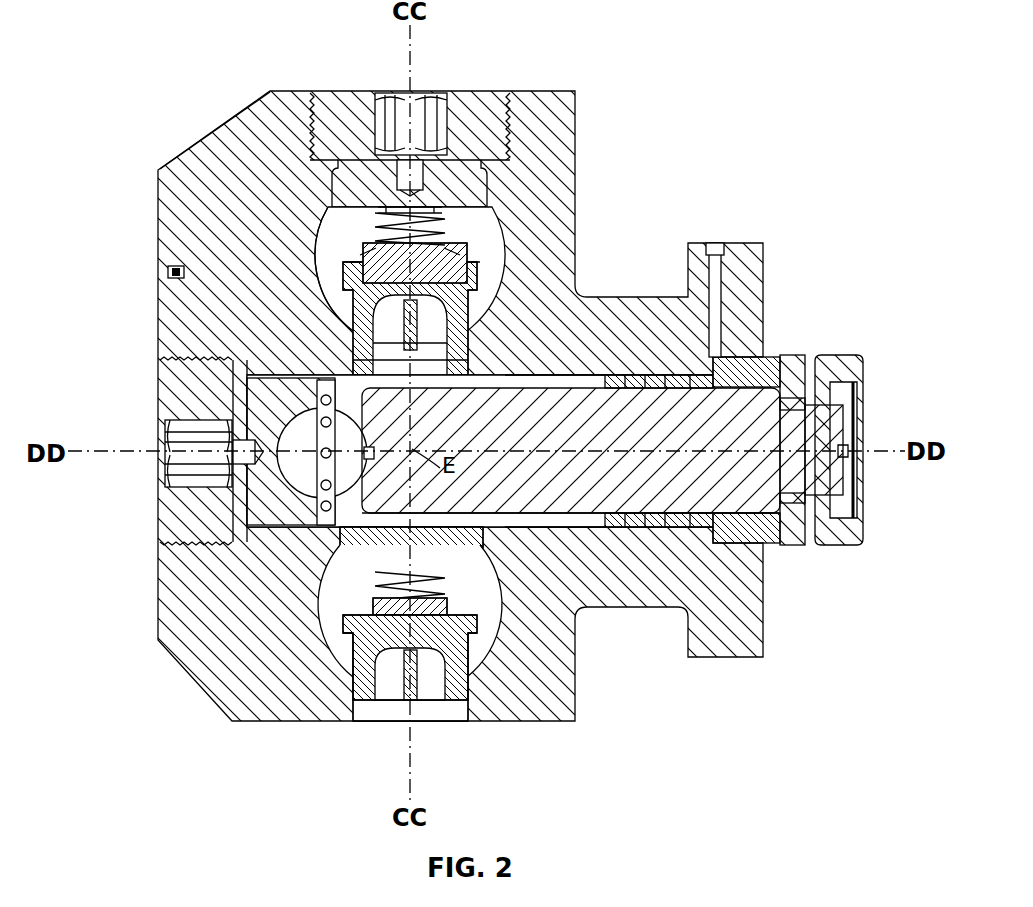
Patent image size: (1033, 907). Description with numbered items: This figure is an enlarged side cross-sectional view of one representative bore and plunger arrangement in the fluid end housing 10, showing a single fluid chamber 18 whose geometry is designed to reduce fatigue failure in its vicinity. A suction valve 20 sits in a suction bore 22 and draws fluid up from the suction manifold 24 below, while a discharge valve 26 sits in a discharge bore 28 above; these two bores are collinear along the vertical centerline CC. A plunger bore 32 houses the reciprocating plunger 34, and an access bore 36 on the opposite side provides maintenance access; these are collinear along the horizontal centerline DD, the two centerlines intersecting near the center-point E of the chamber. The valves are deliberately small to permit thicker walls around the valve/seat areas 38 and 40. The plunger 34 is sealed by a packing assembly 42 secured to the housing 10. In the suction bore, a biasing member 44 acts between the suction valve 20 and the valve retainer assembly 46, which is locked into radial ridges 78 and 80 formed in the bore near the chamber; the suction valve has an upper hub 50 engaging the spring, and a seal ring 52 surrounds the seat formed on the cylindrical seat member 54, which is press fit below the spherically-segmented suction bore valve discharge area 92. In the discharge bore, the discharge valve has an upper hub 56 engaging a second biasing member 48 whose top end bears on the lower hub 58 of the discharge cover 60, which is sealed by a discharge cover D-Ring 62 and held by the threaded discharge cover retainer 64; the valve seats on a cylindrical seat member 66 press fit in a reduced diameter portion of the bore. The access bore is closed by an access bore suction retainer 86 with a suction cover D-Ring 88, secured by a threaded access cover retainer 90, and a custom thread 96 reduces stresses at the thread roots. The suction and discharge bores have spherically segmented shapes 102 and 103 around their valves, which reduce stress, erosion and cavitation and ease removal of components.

The fluid end housing 10 is at (745, 634).
The fluid chamber 18 is at (462, 371).
The suction valve 20 is at (352, 702).
The suction bore 22 is at (478, 645).
The suction manifold 24 is at (425, 700).
The discharge valve 26 is at (500, 238).
The discharge bore 28 is at (455, 248).
The plunger bore 32 is at (600, 380).
The reciprocating plunger 34 is at (830, 430).
The access bore 36 is at (156, 443).
The valve/seat area 38 is at (472, 700).
The valve/seat area 40 is at (395, 280).
The packing assembly 42 is at (790, 548).
The biasing member 44 is at (345, 618).
The valve retainer assembly 46 is at (487, 552).
The second biasing member 48 is at (372, 207).
The upper hub 50 is at (433, 598).
The seal ring 52 is at (478, 665).
The cylindrical seat member 54 is at (330, 695).
The upper hub 56 is at (345, 220).
The lower hub 58 is at (478, 198).
The discharge cover 60 is at (480, 95).
The discharge cover D-Ring 62 is at (240, 118).
The threaded discharge cover retainer 64 is at (332, 92).
The cylindrical seat member 66 is at (485, 300).
The radial ridge 78 is at (330, 585).
The radial ridge 80 is at (480, 525).
The access bore suction retainer 86 is at (240, 542).
The suction cover D-Ring 88 is at (345, 327).
The threaded access cover retainer 90 is at (168, 495).
The spherically-segmented suction bore valve discharge area 92 is at (350, 645).
The custom thread 96 is at (330, 548).
The spherically segmented shape 102 is at (490, 603).
The spherically segmented shape 103 is at (505, 262).